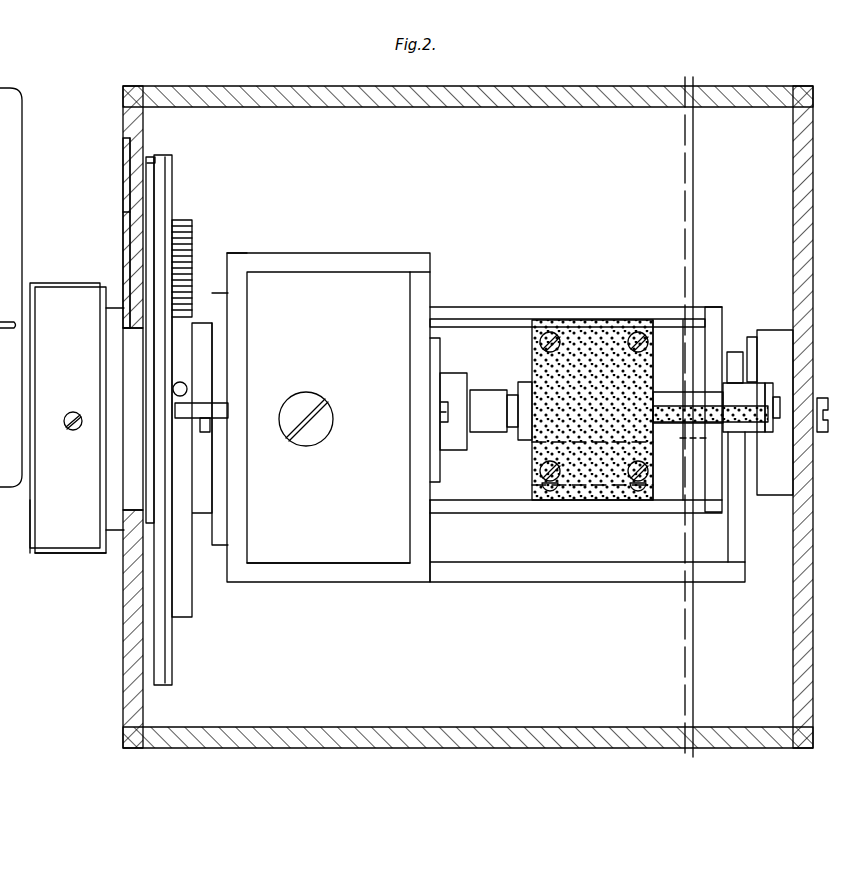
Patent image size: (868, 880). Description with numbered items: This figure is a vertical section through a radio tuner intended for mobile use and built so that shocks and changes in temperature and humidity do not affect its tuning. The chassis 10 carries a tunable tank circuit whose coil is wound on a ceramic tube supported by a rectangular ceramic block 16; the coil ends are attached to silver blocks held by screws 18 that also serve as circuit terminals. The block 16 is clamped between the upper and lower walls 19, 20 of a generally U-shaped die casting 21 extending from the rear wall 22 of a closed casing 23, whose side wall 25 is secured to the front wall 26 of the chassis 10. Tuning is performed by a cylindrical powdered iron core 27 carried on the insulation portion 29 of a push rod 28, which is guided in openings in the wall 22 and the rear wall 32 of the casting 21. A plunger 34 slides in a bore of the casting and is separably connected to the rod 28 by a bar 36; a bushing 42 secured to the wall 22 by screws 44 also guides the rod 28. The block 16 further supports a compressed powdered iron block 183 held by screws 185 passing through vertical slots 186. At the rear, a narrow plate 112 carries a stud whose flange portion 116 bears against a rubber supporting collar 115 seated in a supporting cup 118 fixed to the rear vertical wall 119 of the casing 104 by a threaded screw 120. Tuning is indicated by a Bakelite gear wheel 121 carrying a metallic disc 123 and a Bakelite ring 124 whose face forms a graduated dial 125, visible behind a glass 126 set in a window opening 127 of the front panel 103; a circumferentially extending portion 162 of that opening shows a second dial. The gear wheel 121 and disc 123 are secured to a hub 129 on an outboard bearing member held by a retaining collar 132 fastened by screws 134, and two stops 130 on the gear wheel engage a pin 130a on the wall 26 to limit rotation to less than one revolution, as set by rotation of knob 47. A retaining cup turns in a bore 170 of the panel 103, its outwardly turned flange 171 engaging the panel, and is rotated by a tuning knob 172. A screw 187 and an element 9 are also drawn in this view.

The adjacent structure 9 is at (11, 287).
The chassis 10 is at (556, 582).
The rectangular block 16 is at (532, 358).
The screws 18 is at (540, 342).
The upper wall 19 is at (582, 308).
The lower wall 20 is at (600, 503).
The die casting 21 is at (478, 328).
The rear wall 22 is at (428, 288).
The casing 23 is at (340, 246).
The side wall 25 is at (290, 552).
The front wall 26 is at (237, 258).
The powdered iron core 27 is at (520, 386).
The push rod 28 is at (487, 420).
The insulation portion 29 is at (668, 400).
The rear wall of die casting 32 is at (708, 437).
The plunger 34 is at (755, 386).
The bar 36 is at (770, 420).
The bushing 42 is at (452, 441).
The screws 44 is at (445, 405).
The knob 47 is at (55, 556).
The front panel 103 is at (130, 649).
The casing 104 is at (594, 764).
The narrow plate 112 is at (748, 360).
The rubber supporting collar 115 is at (745, 352).
The flange portion 116 is at (737, 443).
The supporting cup 118 is at (772, 335).
The rear vertical wall 119 is at (812, 625).
The threaded screw 120 is at (830, 419).
The gear wheel 121 is at (193, 233).
The metallic disc 123 is at (172, 178).
The Bakelite ring 124 is at (162, 155).
The graduated dial 125 is at (152, 158).
The glass 126 is at (134, 221).
The window opening 127 is at (127, 175).
The hub 129 is at (200, 513).
The stops 130 is at (186, 388).
The pin 130a is at (200, 408).
The retaining collar 132 is at (218, 490).
The screws 134 is at (208, 423).
The circumferentially extending portion 162 is at (126, 212).
The bore 170 is at (130, 396).
The outwardly turned flange 171 is at (145, 337).
The tuning knob 172 is at (45, 522).
The powdered iron block 183 is at (592, 440).
The screws 185 is at (540, 471).
The vertical slots 186 is at (550, 487).
The adjusting screw 187 is at (308, 405).